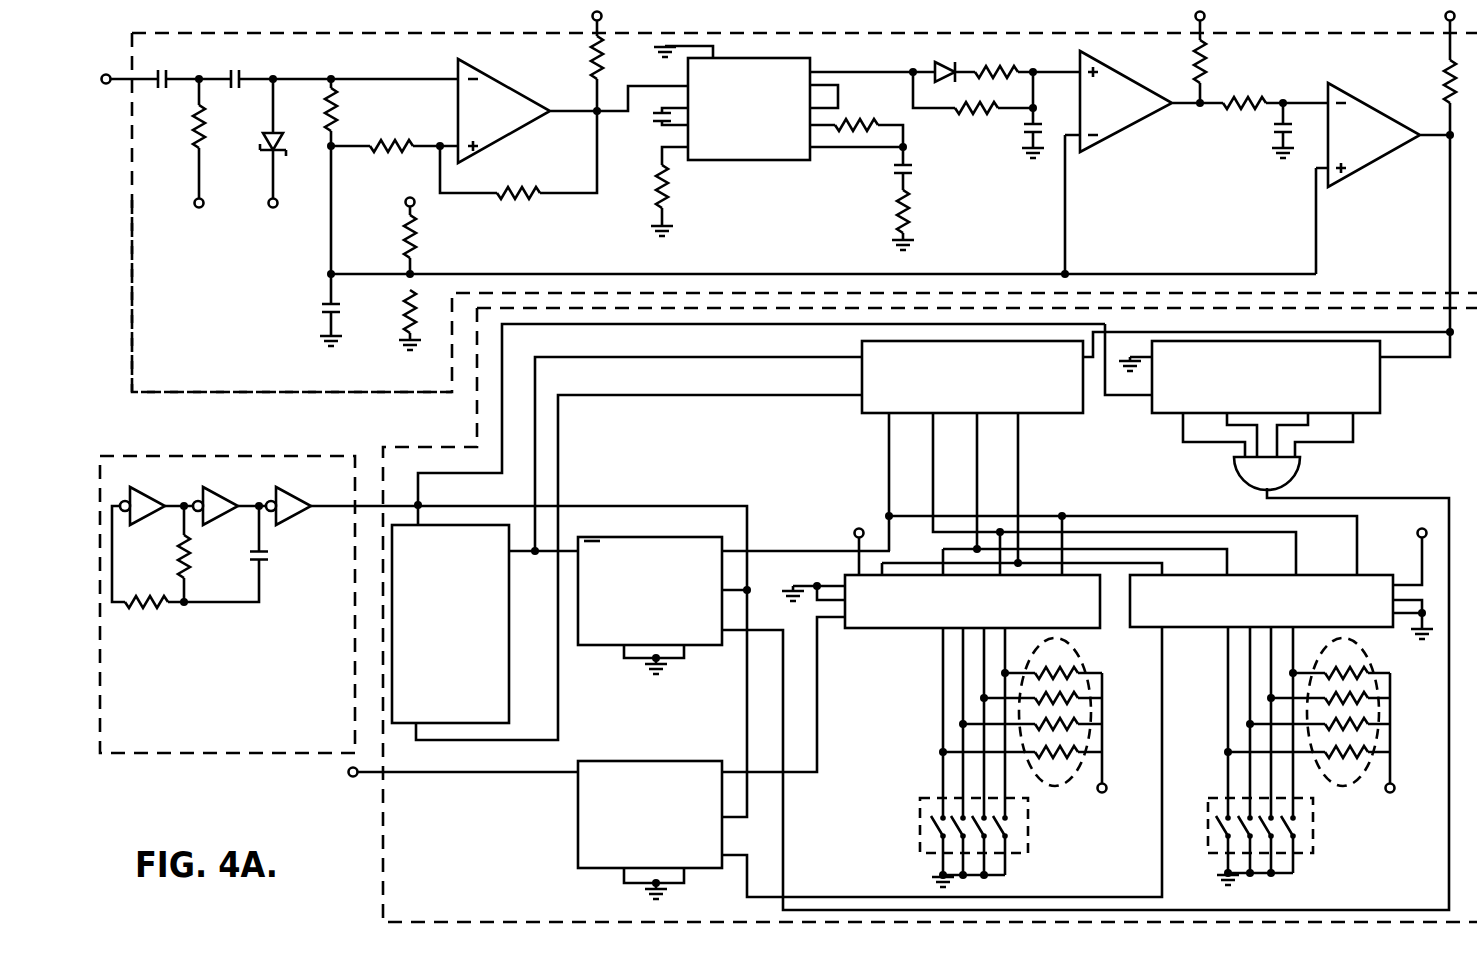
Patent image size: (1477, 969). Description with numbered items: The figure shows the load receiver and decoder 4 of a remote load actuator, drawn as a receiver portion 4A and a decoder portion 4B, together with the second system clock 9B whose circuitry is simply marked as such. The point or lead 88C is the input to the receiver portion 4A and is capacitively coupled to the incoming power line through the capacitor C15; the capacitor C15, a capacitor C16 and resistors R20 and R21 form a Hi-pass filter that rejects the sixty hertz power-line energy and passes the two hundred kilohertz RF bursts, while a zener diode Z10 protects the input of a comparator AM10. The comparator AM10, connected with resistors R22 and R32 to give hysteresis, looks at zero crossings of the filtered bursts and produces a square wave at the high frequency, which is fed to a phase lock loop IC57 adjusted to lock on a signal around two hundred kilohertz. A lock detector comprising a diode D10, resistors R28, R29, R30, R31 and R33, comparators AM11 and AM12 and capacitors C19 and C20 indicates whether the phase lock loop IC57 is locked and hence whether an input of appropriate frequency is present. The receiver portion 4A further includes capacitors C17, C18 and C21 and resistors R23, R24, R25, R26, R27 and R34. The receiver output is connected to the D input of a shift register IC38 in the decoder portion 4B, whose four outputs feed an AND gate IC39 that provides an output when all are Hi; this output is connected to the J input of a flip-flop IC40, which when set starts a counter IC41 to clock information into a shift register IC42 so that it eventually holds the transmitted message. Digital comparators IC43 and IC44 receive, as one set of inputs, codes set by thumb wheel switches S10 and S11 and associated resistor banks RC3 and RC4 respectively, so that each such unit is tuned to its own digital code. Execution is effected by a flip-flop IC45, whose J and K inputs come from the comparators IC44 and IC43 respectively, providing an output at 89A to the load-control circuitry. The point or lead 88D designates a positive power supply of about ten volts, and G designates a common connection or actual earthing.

The load receiver and decoder 4 is at (204, 400).
The receiver portion 4A is at (452, 396).
The decoder portion 4B is at (380, 888).
The second system clock 9B is at (202, 758).
The point or lead 88C is at (106, 74).
The point or lead 88D is at (601, 16).
The output 89A is at (349, 776).
The capacitor C15 is at (157, 70).
The capacitor C16 is at (238, 70).
The capacitor C17 is at (656, 118).
The capacitor C18 is at (912, 176).
The capacitor C19 is at (1022, 130).
The capacitor C20 is at (1276, 136).
The capacitor C21 is at (322, 307).
The resistor R20 is at (196, 128).
The resistor R21 is at (343, 112).
The resistor R22 is at (518, 198).
The resistor R23 is at (603, 62).
The resistor R24 is at (670, 185).
The resistor R25 is at (842, 123).
The resistor R26 is at (405, 226).
The resistor R27 is at (408, 302).
The resistor R28 is at (1000, 70).
The resistor R29 is at (978, 116).
The resistor R30 is at (1248, 114).
The resistor R31 is at (1445, 76).
The resistor R32 is at (408, 150).
The resistor R33 is at (1212, 74).
The resistor R34 is at (898, 224).
The zener diode Z10 is at (266, 128).
The diode D10 is at (945, 63).
The comparator AM10 is at (532, 100).
The comparator AM11 is at (1113, 142).
The comparator AM12 is at (1368, 172).
The phase lock loop IC57 is at (765, 163).
The shift register IC38 is at (1368, 415).
The AND gate IC39 is at (1233, 470).
The flip-flop IC40 is at (604, 646).
The counter IC41 is at (402, 724).
The shift register IC42 is at (885, 415).
The digital comparator IC43 is at (917, 630).
The digital comparator IC44 is at (1157, 630).
The flip-flop IC45 is at (578, 826).
The resistor bank RC3 is at (1055, 786).
The resistor bank RC4 is at (1343, 786).
The switches S10 is at (1026, 853).
The switches S11 is at (1311, 853).
The common connection G is at (658, 48).